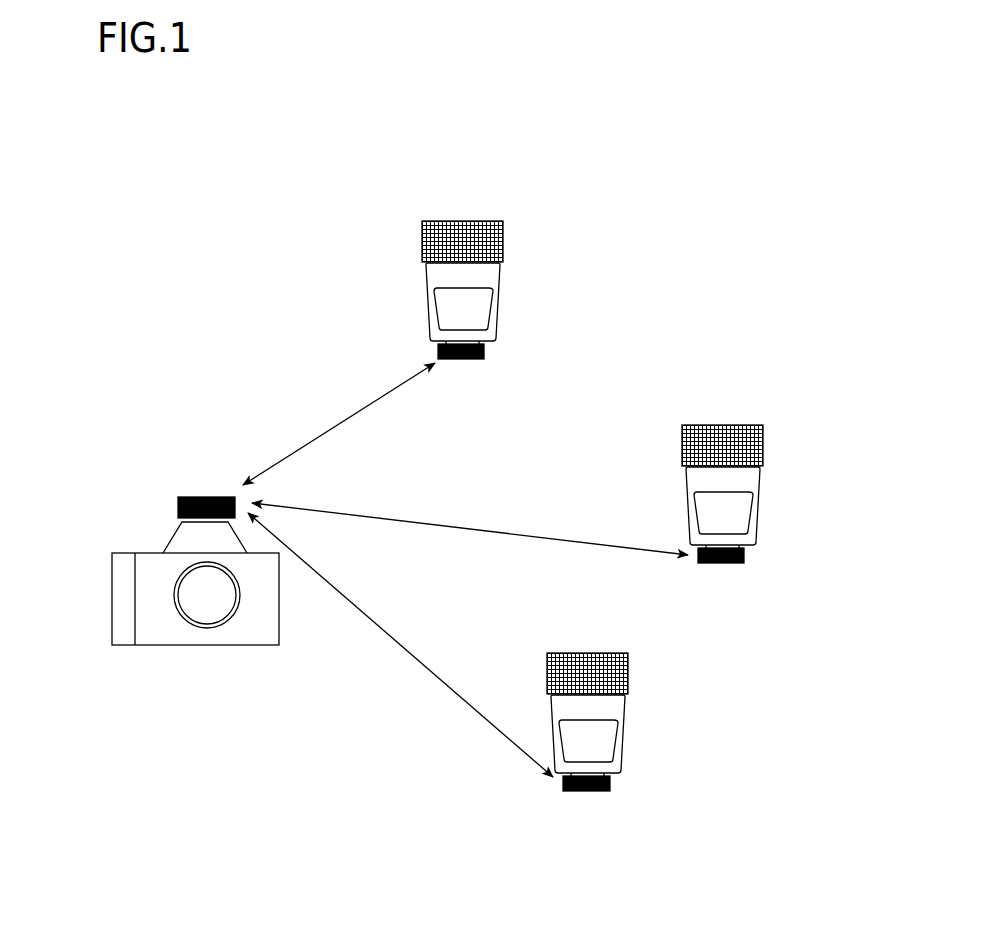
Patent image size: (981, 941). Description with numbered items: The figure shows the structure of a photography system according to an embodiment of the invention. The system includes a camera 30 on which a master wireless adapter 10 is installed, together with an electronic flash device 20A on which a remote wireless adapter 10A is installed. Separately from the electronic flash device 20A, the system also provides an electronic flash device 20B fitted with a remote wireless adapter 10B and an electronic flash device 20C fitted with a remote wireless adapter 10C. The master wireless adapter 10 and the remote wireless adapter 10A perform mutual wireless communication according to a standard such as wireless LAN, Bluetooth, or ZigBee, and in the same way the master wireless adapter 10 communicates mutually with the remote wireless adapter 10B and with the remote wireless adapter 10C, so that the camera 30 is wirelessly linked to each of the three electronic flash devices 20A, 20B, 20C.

The master wireless adapter 10 is at (169, 503).
The remote wireless adapter 10A is at (434, 348).
The remote wireless adapter 10B is at (748, 556).
The remote wireless adapter 10C is at (600, 794).
The electronic flash device 20A is at (488, 282).
The electronic flash device 20B is at (746, 486).
The electronic flash device 20C is at (611, 714).
The camera 30 is at (104, 623).